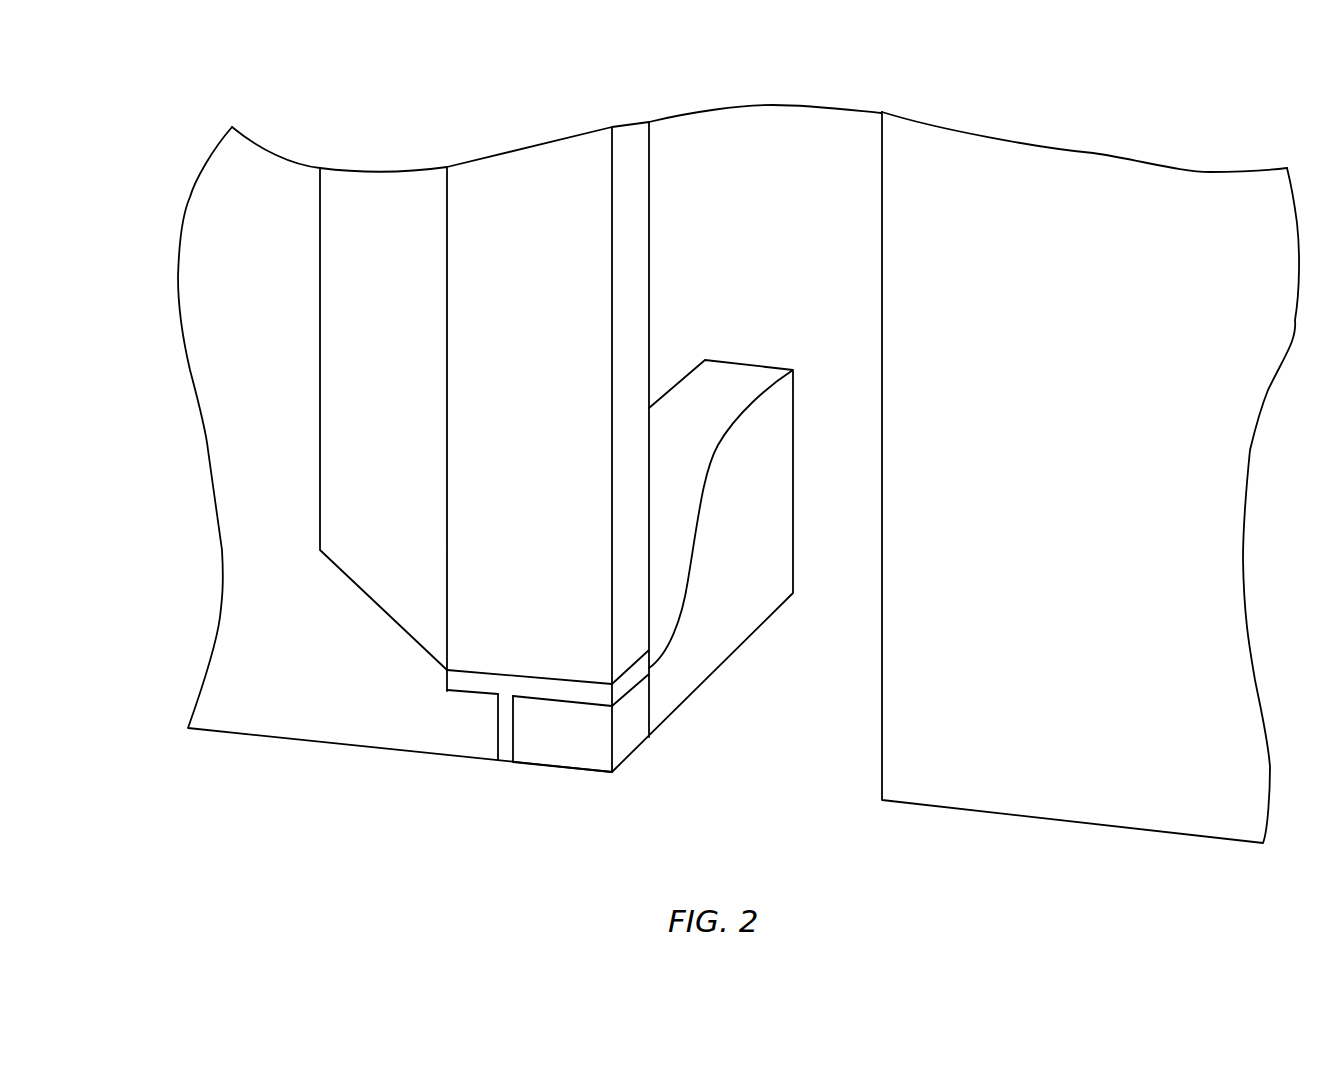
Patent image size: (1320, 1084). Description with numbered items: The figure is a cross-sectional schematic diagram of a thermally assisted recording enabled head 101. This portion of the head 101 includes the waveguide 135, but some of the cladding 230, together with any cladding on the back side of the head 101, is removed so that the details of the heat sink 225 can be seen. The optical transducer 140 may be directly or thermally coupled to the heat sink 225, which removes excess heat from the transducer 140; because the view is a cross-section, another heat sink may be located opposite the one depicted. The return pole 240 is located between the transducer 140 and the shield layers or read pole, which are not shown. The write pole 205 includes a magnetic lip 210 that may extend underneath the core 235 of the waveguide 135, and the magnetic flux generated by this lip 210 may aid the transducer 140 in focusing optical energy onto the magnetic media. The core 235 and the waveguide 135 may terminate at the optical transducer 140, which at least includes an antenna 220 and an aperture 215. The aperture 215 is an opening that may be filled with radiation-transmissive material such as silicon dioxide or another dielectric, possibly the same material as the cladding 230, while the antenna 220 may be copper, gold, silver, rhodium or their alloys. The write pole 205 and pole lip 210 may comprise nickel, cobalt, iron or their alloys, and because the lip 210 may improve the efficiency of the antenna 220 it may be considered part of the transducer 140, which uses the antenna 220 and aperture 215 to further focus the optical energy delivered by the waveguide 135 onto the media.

The TAR enabled head 101 is at (184, 190).
The waveguide 135 is at (880, 110).
The optical transducer 140 is at (607, 683).
The write pole 205 is at (323, 691).
The magnetic lip 210 is at (468, 733).
The aperture 215 is at (504, 762).
The antenna 220 is at (556, 767).
The heat sink 225 is at (747, 365).
The cladding 230 is at (395, 313).
The core 235 is at (552, 313).
The return pole 240 is at (1092, 486).